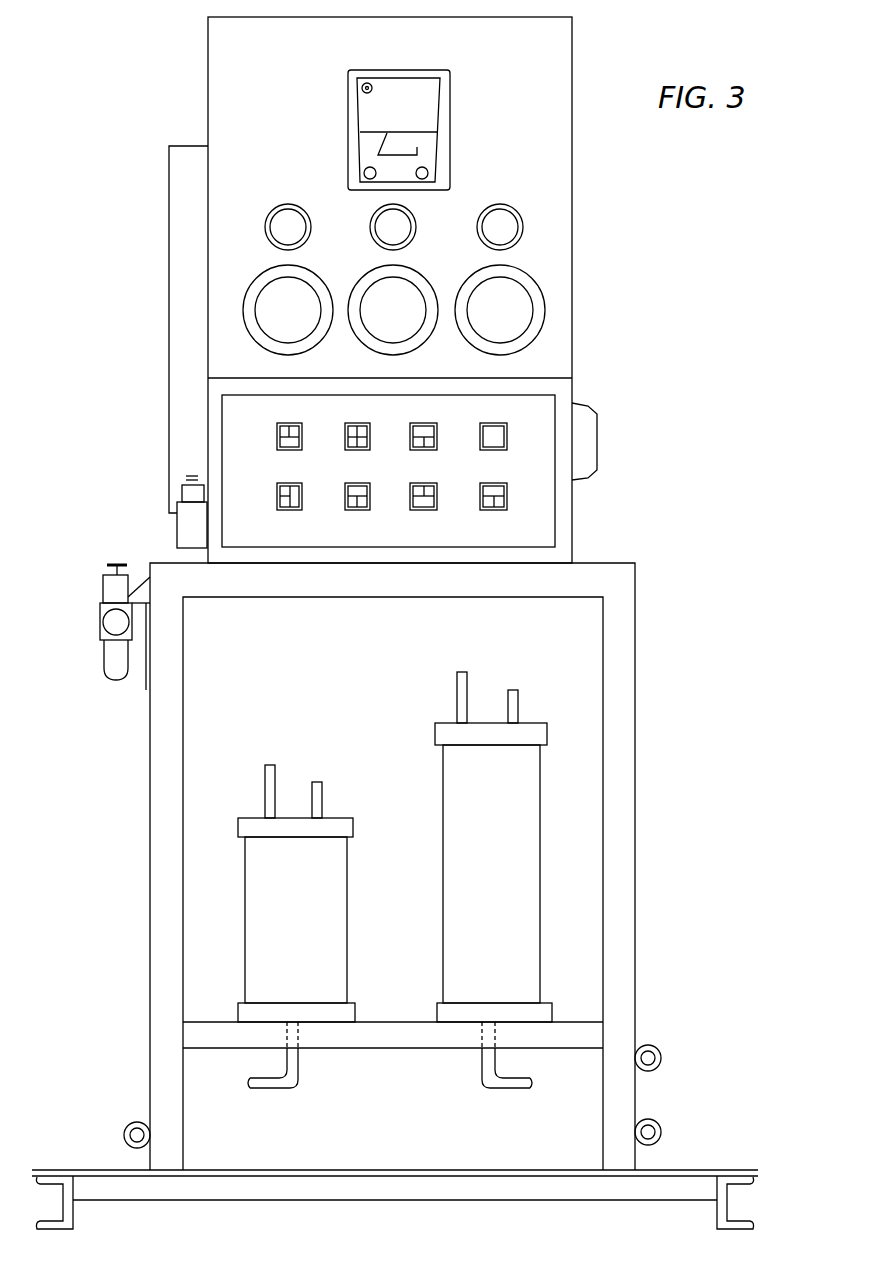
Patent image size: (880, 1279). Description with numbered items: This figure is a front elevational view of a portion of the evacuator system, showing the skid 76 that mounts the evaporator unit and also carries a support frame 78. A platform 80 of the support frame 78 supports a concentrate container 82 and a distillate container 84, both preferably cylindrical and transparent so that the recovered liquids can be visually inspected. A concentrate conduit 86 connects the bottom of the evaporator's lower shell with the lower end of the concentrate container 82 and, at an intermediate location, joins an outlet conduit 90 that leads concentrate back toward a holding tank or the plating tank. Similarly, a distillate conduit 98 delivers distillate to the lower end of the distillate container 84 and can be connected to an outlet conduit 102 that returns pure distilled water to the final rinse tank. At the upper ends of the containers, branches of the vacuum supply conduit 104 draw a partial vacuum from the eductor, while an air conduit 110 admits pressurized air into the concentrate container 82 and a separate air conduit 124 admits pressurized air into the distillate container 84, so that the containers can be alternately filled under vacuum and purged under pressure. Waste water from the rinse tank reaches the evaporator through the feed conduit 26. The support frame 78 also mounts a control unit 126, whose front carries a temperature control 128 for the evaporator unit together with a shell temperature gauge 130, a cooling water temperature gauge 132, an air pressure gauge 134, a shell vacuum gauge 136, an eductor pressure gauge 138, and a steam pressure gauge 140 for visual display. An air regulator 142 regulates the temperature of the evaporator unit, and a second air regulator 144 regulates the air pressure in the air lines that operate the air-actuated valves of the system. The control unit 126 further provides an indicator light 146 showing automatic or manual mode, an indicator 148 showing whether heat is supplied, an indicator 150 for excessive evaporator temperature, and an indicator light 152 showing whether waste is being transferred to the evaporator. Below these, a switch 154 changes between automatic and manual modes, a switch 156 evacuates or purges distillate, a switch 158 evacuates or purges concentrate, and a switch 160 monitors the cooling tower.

The feed conduit 26 is at (660, 1122).
The skid 76 is at (395, 1168).
The support frame 78 is at (635, 862).
The platform 80 is at (383, 1042).
The concentrate container 82 is at (310, 914).
The distillate container 84 is at (513, 869).
The concentrate conduit 86 is at (272, 1090).
The outlet conduit 90 is at (125, 1125).
The distillate conduit 98 is at (515, 1090).
The outlet conduit 102 is at (652, 1047).
The vacuum supply conduit 104 is at (265, 798).
The air conduit 110 is at (322, 795).
The air conduit 124 is at (518, 700).
The control unit 126 is at (555, 150).
The temperature control 128 is at (392, 86).
The shell temperature gauge 130 is at (510, 227).
The cooling water temperature gauge 132 is at (398, 227).
The air pressure gauge 134 is at (287, 224).
The shell vacuum gauge 136 is at (528, 318).
The eductor pressure gauge 138 is at (397, 295).
The steam pressure gauge 140 is at (283, 290).
The air regulator 142 is at (187, 527).
The air regulator 144 is at (110, 587).
The indicator light 146 is at (288, 428).
The indicator 148 is at (360, 413).
The indicator 150 is at (440, 413).
The indicator light 152 is at (525, 413).
The switch 154 is at (288, 505).
The switch 156 is at (358, 505).
The switch 158 is at (423, 505).
The switch 160 is at (493, 505).